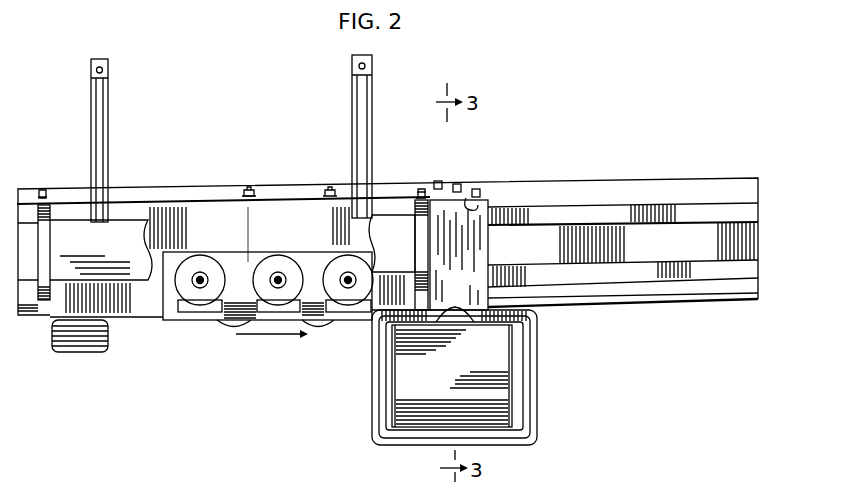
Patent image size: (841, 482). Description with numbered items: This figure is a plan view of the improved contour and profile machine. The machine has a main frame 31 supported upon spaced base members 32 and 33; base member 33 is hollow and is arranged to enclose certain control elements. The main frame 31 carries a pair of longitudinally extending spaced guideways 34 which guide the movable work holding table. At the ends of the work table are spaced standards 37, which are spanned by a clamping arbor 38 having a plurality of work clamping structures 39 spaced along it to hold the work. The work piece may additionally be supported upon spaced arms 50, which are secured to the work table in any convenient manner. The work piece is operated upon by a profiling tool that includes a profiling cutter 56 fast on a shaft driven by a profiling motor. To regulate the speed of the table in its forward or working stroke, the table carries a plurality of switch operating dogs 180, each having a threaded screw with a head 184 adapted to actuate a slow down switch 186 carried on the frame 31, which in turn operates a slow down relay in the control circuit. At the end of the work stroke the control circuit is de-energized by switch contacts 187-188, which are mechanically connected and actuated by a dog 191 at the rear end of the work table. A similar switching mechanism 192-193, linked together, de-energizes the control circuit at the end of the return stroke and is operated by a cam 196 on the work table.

The main frame 31 is at (623, 178).
The base member 32 is at (80, 353).
The base member 33 is at (539, 380).
The guideways 34 is at (694, 210).
The standards 37 is at (47, 299).
The clamping arbor 38 is at (107, 253).
The work clamping structures 39 is at (281, 265).
The arms 50 is at (109, 113).
The profiling cutter 56 is at (455, 318).
The switch operating dogs 180 is at (247, 182).
The head 184 is at (257, 192).
The slow down switch 186 is at (458, 184).
The switch contacts 187-188 is at (439, 181).
The dog 191 is at (43, 189).
The switching mechanism 192-193 is at (476, 189).
The cam 196 is at (478, 208).